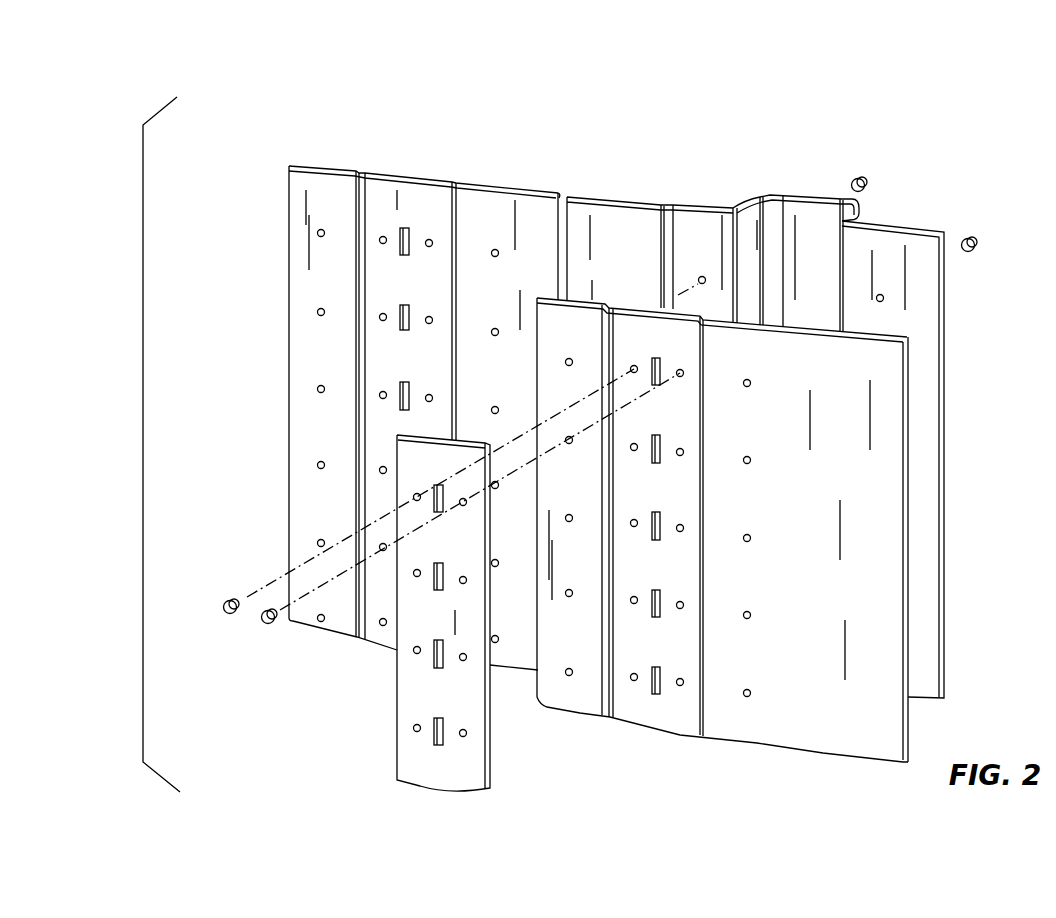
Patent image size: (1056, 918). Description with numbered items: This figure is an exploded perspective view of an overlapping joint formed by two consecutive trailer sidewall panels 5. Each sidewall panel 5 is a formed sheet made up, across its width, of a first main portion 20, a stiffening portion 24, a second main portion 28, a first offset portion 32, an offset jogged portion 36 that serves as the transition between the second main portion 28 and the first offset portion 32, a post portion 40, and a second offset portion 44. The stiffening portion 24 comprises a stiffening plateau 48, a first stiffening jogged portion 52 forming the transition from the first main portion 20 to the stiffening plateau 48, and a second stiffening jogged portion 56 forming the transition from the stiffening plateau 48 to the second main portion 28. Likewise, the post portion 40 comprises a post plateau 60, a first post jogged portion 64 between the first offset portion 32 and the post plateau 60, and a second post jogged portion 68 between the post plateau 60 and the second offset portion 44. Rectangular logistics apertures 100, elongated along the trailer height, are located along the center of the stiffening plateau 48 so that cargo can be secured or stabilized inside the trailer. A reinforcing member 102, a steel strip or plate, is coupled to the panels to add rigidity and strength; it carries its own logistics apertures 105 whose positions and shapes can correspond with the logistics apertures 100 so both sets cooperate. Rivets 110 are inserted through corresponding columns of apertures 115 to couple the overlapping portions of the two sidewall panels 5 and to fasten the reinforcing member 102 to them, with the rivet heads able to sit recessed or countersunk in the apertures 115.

The sidewall panel 5 is at (760, 120).
The first main portion 20 is at (293, 177).
The stiffening portion 24 is at (420, 108).
The second main portion 28 is at (532, 200).
The first offset portion 32 is at (718, 215).
The offset jogged portion 36 is at (667, 215).
The post portion 40 is at (897, 172).
The second offset portion 44 is at (918, 228).
The stiffening plateau 48 is at (408, 184).
The first stiffening jogged portion 52 is at (362, 178).
The second stiffening jogged portion 56 is at (455, 190).
The post plateau 60 is at (810, 208).
The first post jogged portion 64 is at (763, 208).
The second post jogged portion 68 is at (865, 217).
The logistics apertures 100 is at (405, 232).
The reinforcing member 102 is at (480, 760).
The logistics apertures 105 is at (439, 486).
The rivets 110 is at (862, 180).
The apertures 115 is at (320, 236).